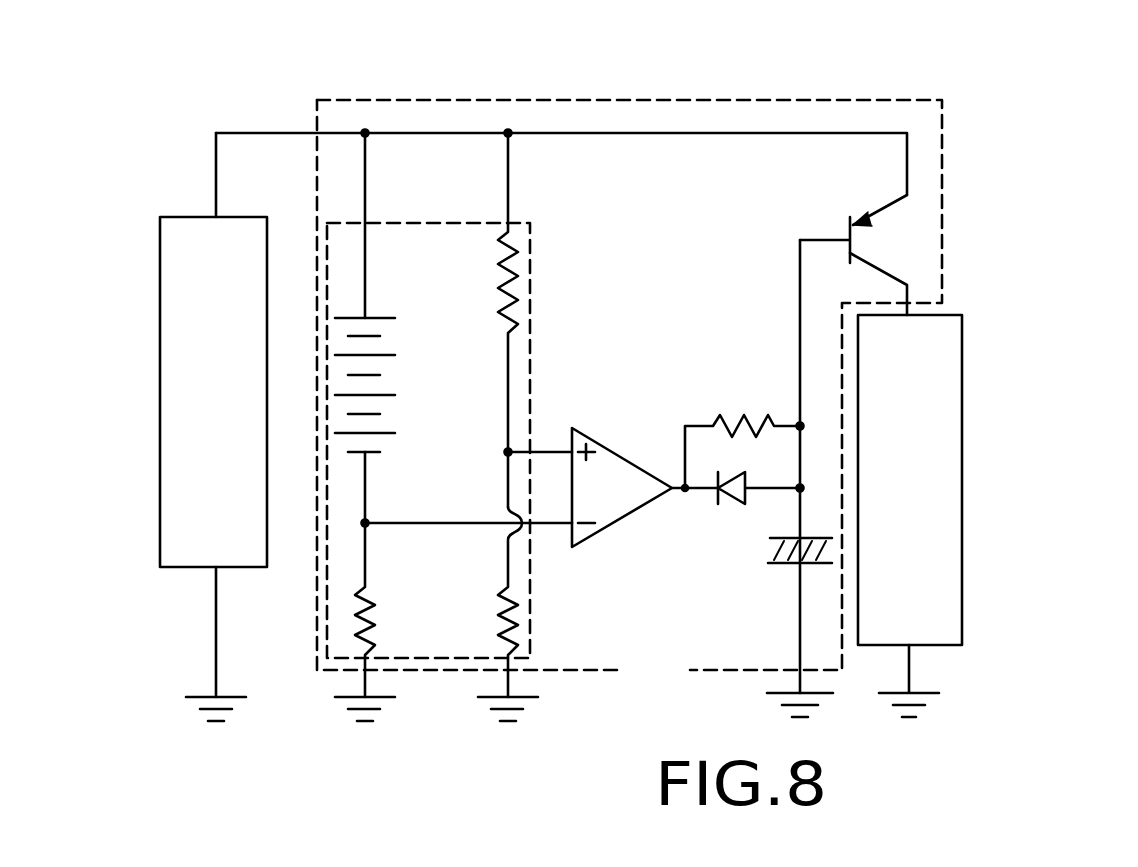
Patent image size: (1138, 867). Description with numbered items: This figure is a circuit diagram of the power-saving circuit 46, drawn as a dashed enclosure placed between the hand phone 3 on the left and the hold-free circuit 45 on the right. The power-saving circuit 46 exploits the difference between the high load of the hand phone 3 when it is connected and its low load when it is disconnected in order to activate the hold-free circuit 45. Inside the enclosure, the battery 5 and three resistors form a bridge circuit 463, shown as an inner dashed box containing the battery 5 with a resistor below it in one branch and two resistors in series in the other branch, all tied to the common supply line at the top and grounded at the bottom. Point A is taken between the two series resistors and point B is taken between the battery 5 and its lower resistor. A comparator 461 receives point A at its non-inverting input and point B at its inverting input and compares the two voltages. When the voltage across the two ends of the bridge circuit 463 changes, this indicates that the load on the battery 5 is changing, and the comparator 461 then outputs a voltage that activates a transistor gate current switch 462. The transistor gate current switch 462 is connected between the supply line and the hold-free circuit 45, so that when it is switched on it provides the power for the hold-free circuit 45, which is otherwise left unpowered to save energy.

The hand phone 3 is at (145, 373).
The battery 5 is at (405, 340).
The hold-free circuit 45 is at (975, 495).
The power-saving circuit 46 is at (629, 99).
The comparator 461 is at (640, 520).
The transistor gate current switch 462 is at (915, 243).
The bridge circuit 463 is at (432, 500).
The point A is at (515, 447).
The point B is at (378, 518).